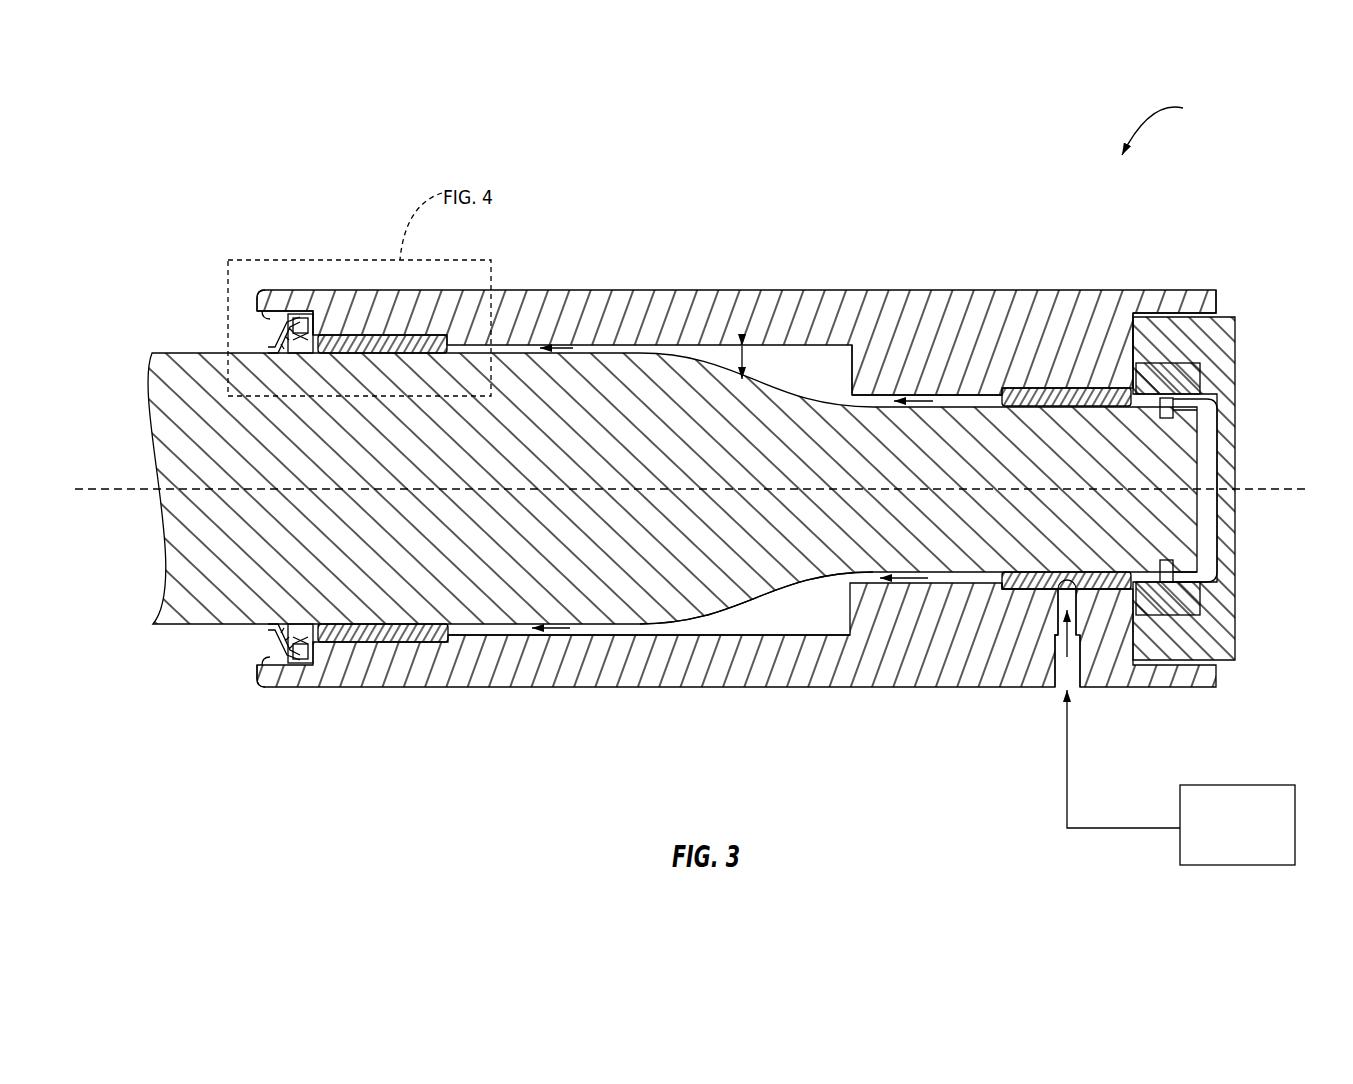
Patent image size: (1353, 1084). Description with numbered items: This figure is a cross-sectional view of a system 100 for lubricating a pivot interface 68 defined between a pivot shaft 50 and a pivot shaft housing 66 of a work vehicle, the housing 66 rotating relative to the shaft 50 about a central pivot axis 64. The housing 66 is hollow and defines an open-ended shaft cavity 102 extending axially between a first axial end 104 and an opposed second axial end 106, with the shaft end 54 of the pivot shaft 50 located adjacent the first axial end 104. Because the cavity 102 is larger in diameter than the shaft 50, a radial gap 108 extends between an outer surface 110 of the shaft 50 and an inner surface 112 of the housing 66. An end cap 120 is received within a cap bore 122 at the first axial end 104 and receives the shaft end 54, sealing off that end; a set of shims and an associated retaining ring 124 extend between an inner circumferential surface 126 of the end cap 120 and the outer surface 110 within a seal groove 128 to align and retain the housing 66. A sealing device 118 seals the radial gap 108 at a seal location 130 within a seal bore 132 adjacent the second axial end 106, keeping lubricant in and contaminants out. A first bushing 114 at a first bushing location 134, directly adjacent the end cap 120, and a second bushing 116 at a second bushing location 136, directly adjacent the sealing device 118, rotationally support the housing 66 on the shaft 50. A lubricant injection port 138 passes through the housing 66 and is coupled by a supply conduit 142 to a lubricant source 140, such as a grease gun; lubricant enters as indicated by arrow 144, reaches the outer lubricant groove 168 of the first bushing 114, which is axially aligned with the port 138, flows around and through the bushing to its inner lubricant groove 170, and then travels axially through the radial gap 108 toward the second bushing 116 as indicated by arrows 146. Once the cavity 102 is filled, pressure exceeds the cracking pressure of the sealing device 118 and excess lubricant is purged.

The pivot shaft 50 is at (200, 543).
The second shaft end 54 is at (1203, 510).
The central pivot axis 64 is at (120, 488).
The pivot shaft housing 66 is at (853, 290).
The pivot interface 68 is at (156, 330).
The system 100 is at (1170, 126).
The shaft cavity 102 is at (776, 378).
The first axial end 104 is at (1214, 302).
The second axial end 106 is at (253, 655).
The radial gap 108 is at (741, 357).
The outer surface 110 is at (650, 618).
The inner surface 112 is at (737, 626).
The first bushing 114 is at (1025, 595).
The second bushing 116 is at (402, 645).
The sealing device 118 is at (268, 337).
The end cap 120 is at (1241, 347).
The cap bore 122 is at (1156, 307).
The set of shims and retaining ring 124 is at (1195, 373).
The inner circumferential surface 126 is at (1172, 608).
The seal groove 128 is at (1180, 416).
The seal location 130 is at (300, 672).
The seal bore 132 is at (267, 667).
The first bushing location 134 is at (1010, 330).
The second bushing location 136 is at (442, 303).
The lubricant injection port 138 is at (1050, 663).
The lubricant source 140 is at (1222, 838).
The supply conduit 142 is at (1103, 830).
The arrow 144 is at (1072, 640).
The arrows 146 is at (562, 348).
The outer lubricant groove 168 is at (1062, 395).
The inner lubricant groove 170 is at (1047, 575).